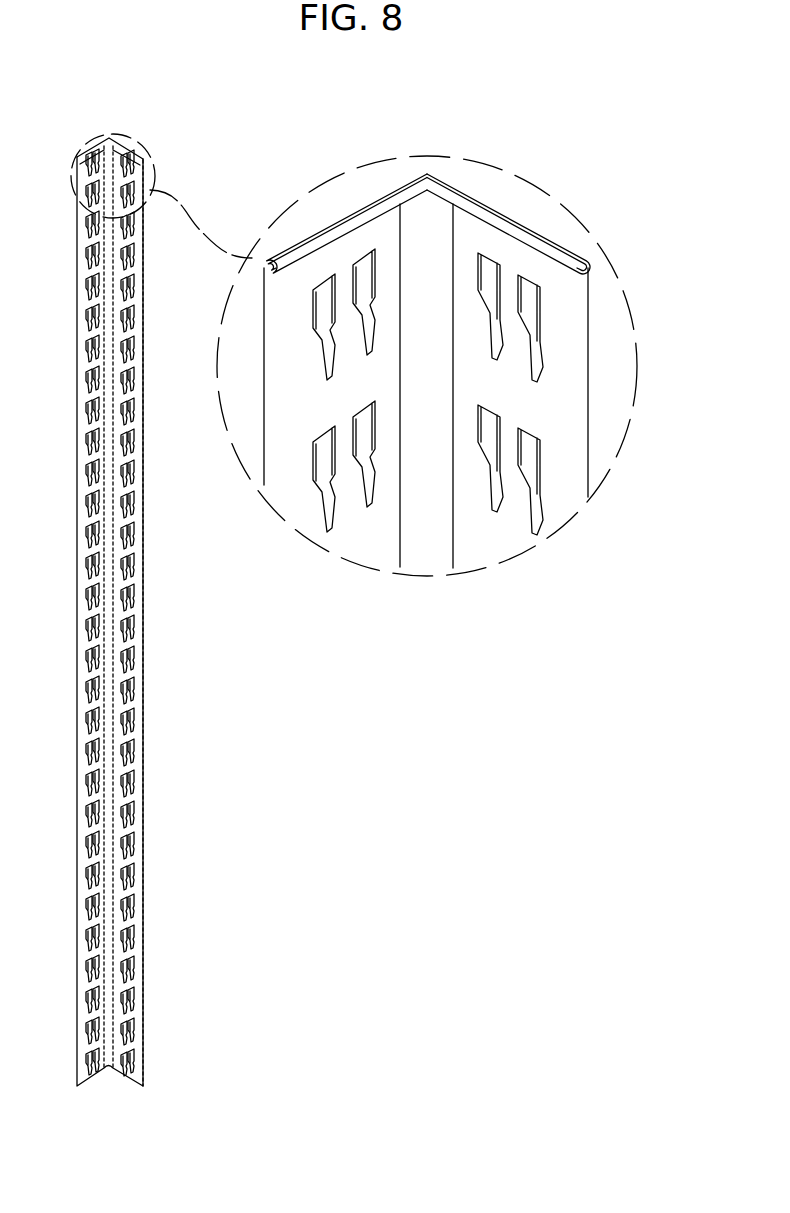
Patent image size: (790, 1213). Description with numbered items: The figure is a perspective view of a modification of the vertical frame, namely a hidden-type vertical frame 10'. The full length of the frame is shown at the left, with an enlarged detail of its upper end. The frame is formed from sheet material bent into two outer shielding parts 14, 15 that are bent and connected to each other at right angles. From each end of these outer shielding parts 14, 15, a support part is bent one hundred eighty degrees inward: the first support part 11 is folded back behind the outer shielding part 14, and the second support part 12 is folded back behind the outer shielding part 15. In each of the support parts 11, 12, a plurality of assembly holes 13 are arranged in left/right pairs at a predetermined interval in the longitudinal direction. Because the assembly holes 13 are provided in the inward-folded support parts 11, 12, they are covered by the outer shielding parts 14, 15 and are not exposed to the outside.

The hidden-type vertical frame 10' is at (189, 612).
The first support part 11 is at (377, 535).
The second support part 12 is at (471, 532).
The assembly hole 13 is at (545, 496).
The outer shielding part 14 is at (347, 212).
The outer shielding part 15 is at (540, 222).